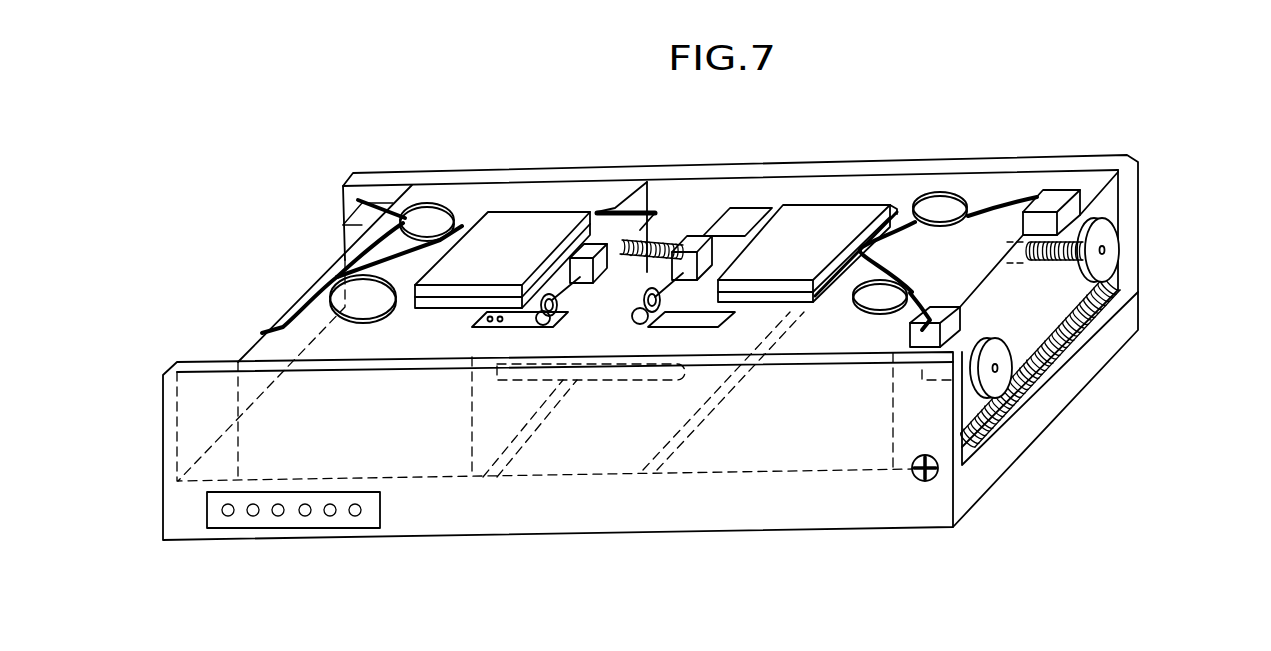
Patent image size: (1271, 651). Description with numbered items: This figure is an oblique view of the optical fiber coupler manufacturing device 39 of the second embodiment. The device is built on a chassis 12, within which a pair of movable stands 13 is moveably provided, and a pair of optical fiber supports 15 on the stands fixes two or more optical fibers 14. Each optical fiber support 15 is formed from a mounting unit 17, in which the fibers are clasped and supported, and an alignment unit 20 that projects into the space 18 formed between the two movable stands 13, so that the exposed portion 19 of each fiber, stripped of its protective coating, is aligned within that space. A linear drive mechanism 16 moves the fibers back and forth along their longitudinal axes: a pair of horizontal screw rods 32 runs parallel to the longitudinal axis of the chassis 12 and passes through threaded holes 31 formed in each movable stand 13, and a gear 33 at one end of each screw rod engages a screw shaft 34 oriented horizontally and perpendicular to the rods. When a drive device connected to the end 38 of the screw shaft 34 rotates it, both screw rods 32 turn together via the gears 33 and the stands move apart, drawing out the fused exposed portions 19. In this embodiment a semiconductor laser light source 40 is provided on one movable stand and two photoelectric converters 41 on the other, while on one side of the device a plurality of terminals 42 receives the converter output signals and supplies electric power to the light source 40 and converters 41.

The chassis 12 is at (183, 514).
The movable stands 13 is at (818, 343).
The optical fibers 14 is at (433, 203).
The optical fiber supports 15 is at (535, 103).
The linear drive mechanism 16 is at (1217, 208).
The mounting unit 17 is at (570, 217).
The space 18 is at (688, 190).
The exposed portion 19 is at (634, 284).
The alignment unit 20 is at (617, 297).
The threaded holes 31 is at (1005, 265).
The screw rods 32 is at (1125, 275).
The gear 33 is at (1112, 253).
The screw shaft 34 is at (1097, 320).
The end of the screw shaft 38 is at (917, 480).
The optical fiber coupler manufacturing device 39 is at (257, 200).
The semiconductor laser 40 is at (363, 220).
The photoelectric converters 41 is at (1070, 173).
The terminals 42 is at (266, 520).